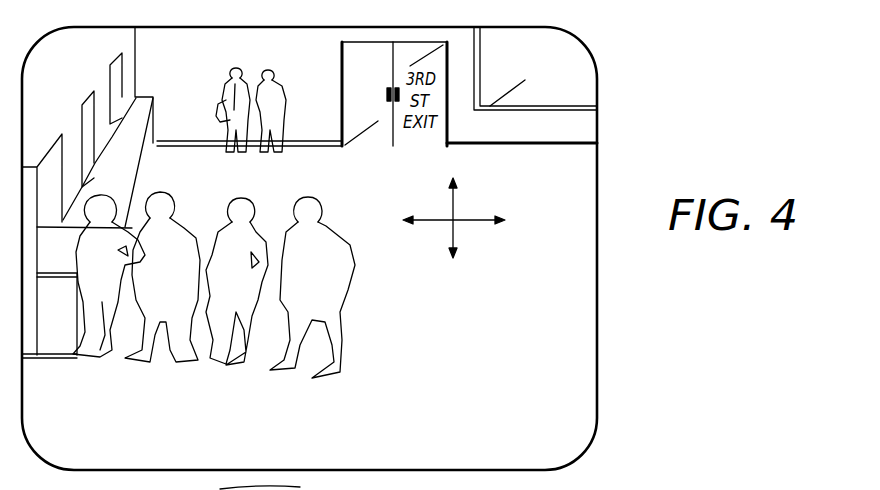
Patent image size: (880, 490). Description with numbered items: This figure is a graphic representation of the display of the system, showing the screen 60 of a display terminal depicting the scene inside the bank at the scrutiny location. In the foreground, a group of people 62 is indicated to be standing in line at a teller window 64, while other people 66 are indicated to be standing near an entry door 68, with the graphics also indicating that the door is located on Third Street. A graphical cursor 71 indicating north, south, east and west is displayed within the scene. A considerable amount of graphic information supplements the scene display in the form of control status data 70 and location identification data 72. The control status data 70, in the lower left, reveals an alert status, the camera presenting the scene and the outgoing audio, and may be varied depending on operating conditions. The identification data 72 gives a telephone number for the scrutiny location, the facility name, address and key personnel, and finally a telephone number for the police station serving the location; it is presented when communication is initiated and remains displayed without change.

The screen 60 is at (597, 165).
The group of people 62 is at (125, 228).
The teller window 64 is at (45, 234).
The other people 66 is at (225, 96).
The entry door 68 is at (447, 92).
The control status data 70 is at (217, 422).
The graphical cursor 71 is at (468, 210).
The location identification data 72 is at (487, 285).